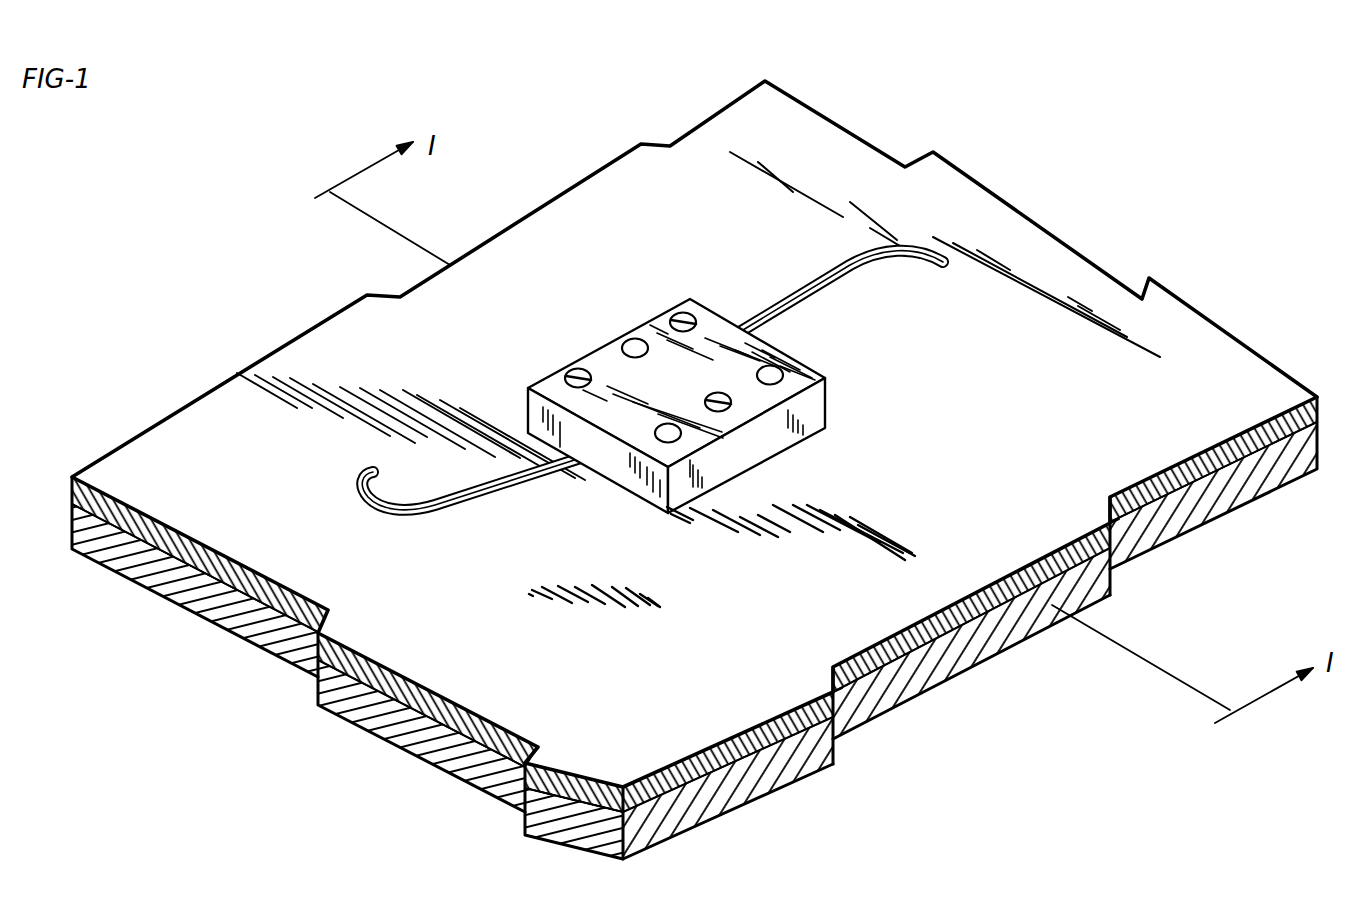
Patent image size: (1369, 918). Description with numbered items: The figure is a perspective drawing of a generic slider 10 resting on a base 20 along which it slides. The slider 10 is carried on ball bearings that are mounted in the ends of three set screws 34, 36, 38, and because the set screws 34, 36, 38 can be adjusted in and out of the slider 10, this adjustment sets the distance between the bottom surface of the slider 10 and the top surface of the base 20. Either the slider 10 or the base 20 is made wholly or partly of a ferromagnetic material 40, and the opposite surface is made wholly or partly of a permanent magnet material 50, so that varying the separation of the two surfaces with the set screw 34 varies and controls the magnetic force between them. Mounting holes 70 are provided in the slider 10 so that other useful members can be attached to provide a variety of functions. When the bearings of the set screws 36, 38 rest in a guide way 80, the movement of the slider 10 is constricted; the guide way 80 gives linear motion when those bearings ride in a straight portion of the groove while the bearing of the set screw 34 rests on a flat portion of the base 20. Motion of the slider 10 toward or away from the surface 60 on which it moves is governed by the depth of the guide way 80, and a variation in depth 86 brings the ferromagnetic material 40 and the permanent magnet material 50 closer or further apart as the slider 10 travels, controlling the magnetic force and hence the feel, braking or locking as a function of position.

The slider 10 is at (718, 322).
The base 20 is at (982, 192).
The set screw 34 is at (742, 353).
The set screw 36 is at (683, 312).
The set screw 38 is at (571, 369).
The ferromagnetic material 40 is at (200, 592).
The permanent magnet material 50 is at (526, 388).
The surface 60 is at (1280, 440).
The mounting holes 70 is at (630, 340).
The guide way 80 is at (443, 486).
The variation in depth 86 is at (907, 248).